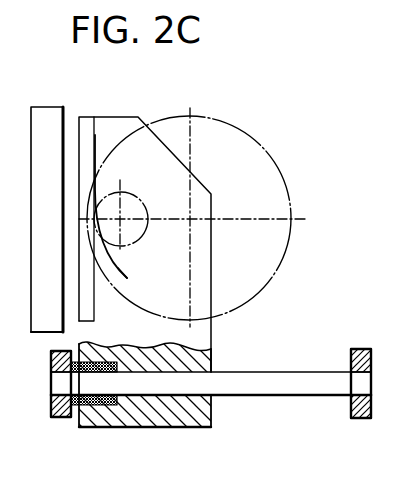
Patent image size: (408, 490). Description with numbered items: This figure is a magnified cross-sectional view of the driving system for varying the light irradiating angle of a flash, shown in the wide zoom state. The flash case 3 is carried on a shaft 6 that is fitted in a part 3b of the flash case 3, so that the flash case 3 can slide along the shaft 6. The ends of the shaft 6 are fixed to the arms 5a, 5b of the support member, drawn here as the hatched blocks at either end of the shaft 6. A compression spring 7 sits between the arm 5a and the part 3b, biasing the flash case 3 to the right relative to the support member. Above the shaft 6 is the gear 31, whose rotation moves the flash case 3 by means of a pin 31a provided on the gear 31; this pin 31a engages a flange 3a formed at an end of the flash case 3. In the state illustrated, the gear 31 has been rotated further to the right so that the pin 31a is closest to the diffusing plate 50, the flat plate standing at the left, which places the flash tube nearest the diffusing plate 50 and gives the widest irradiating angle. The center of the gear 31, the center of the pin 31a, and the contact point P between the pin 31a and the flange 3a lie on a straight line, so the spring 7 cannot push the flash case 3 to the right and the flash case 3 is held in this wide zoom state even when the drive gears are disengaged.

The diffusing plate 50 is at (52, 107).
The flash case 3 is at (144, 126).
The flange 3a is at (95, 135).
The part of the flash case 3b is at (168, 418).
The gear 31 is at (219, 118).
The pin 31a is at (137, 194).
The arm 5a is at (62, 418).
The arm 5b is at (357, 418).
The shaft 6 is at (292, 396).
The compression spring 7 is at (95, 405).
The contact point P is at (132, 282).